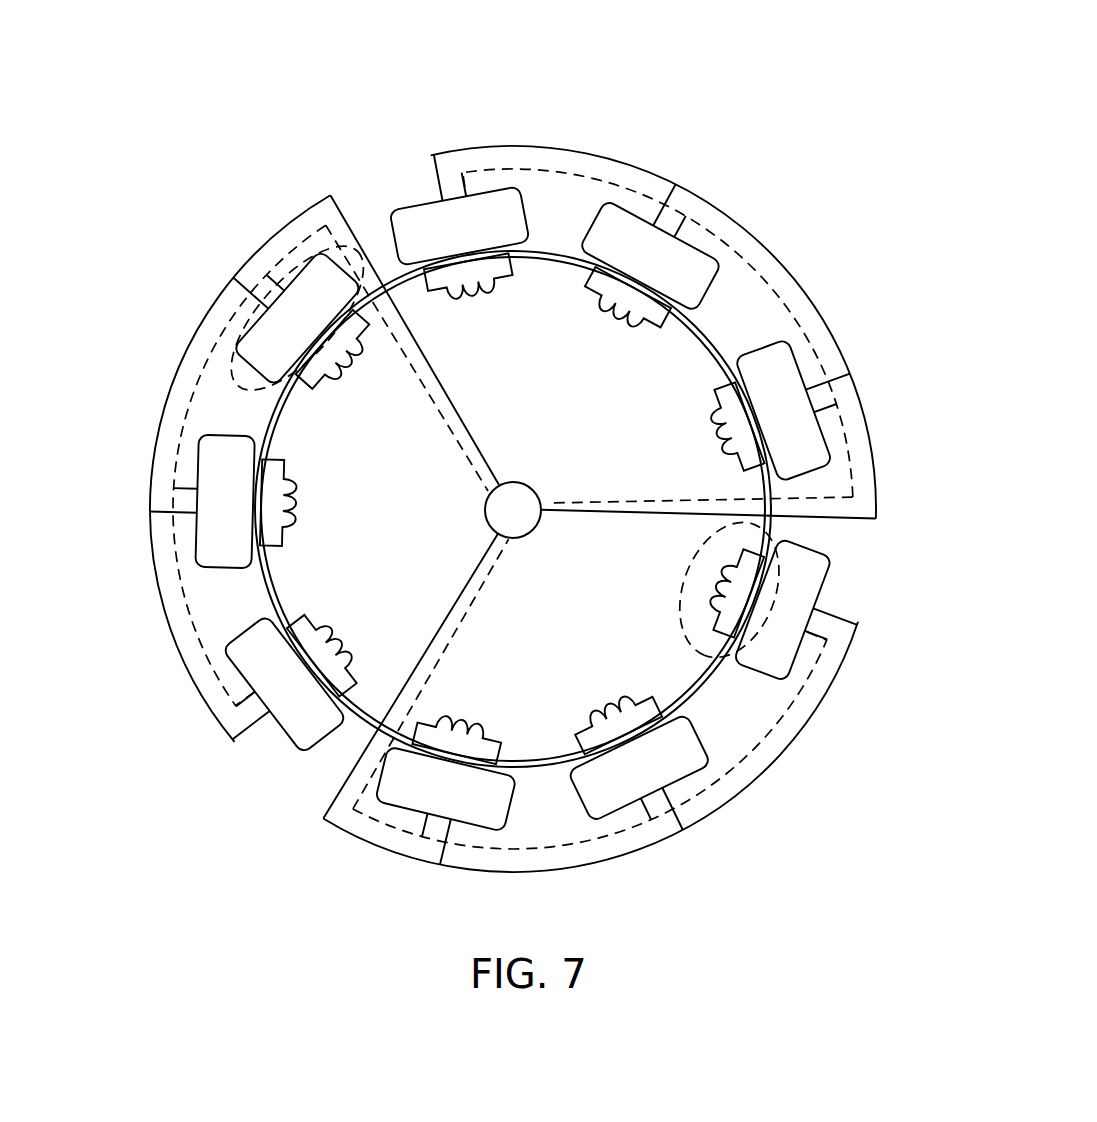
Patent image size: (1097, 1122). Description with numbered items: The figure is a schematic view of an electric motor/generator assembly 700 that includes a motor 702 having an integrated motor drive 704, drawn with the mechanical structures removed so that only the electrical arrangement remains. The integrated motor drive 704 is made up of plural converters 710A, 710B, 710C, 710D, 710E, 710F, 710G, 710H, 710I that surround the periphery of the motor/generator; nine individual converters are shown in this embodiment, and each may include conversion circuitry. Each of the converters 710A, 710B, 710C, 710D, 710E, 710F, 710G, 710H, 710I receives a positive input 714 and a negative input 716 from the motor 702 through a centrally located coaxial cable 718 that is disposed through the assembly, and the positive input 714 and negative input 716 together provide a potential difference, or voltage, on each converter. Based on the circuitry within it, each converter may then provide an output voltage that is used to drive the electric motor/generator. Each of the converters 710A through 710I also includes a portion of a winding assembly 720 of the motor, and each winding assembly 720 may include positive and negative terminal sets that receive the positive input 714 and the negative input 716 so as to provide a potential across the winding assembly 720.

The electric motor/generator assembly 700 is at (495, 472).
The motor 702 is at (706, 334).
The integrated motor drive 704 is at (603, 128).
The converter 710A is at (466, 170).
The converter 710B is at (704, 246).
The converter 710C is at (836, 420).
The converter 710D is at (832, 596).
The converter 710E is at (732, 776).
The converter 710F is at (505, 822).
The converter 710G is at (278, 758).
The converter 710H is at (196, 458).
The converter 710I is at (302, 256).
The positive input 714 is at (425, 376).
The negative input 716 is at (420, 350).
The coaxial cable 718 is at (515, 490).
The winding assembly 720 is at (320, 504).